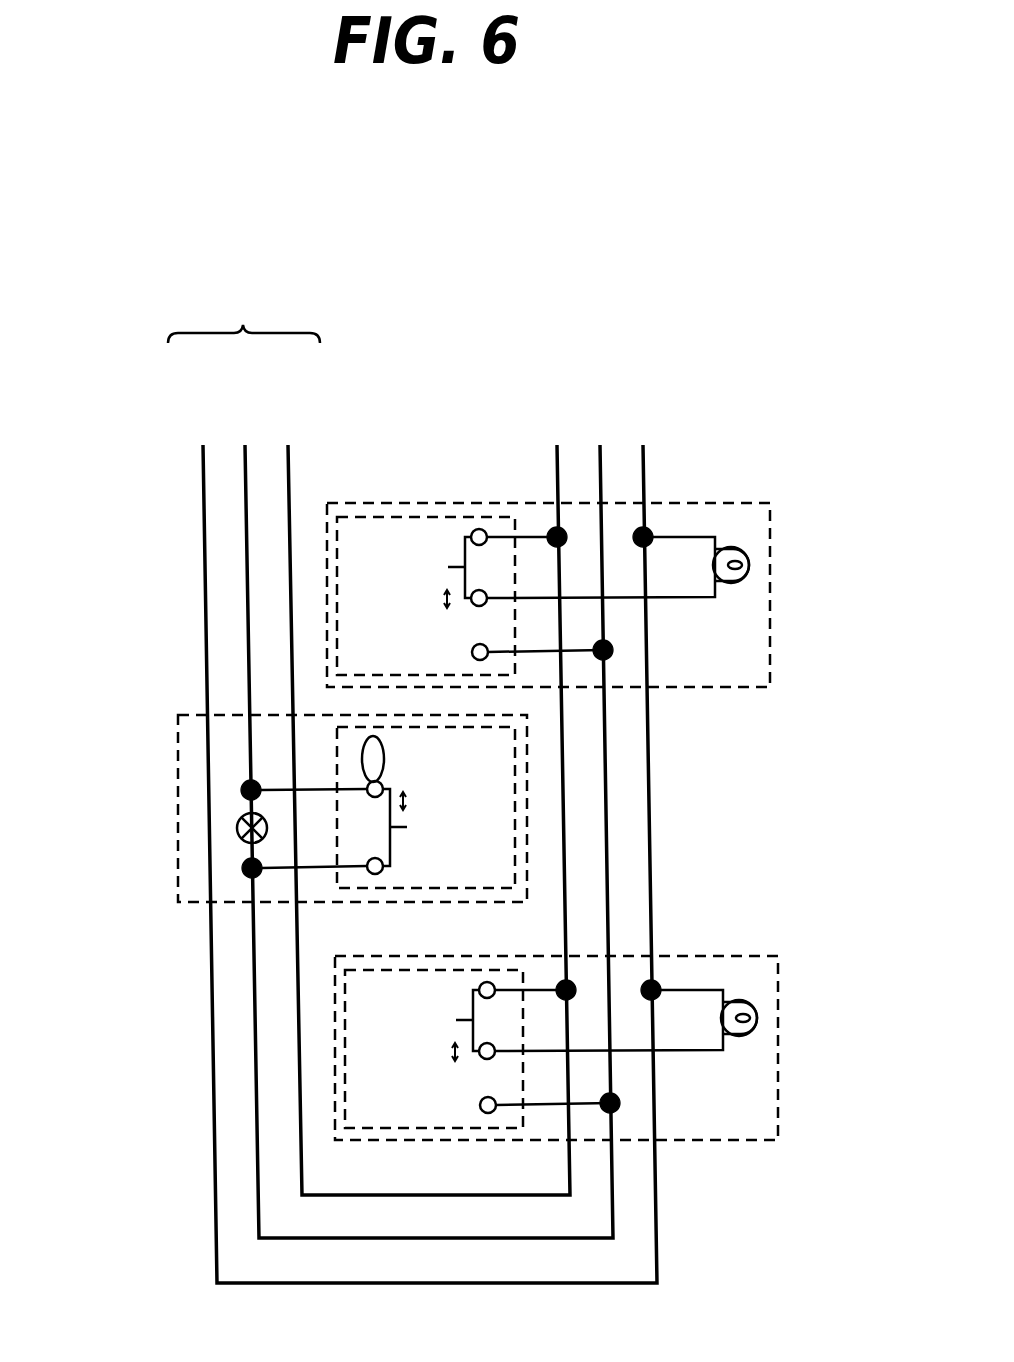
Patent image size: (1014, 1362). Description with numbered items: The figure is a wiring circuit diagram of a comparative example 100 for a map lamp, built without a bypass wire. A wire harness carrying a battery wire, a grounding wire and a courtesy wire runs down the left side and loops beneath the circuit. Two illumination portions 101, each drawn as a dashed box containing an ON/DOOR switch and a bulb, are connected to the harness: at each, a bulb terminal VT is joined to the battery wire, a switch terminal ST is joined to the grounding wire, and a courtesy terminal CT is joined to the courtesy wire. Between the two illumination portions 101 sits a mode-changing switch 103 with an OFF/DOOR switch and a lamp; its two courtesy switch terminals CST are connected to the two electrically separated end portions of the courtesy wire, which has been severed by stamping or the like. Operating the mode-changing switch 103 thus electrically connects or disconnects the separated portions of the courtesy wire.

The comparative example 100 is at (604, 370).
The illumination portion 101 is at (405, 503).
The mode-changing switch 103 is at (527, 772).
The switch terminal ST is at (557, 537).
The bulb terminal VT is at (643, 537).
The courtesy terminal CT is at (603, 650).
The courtesy switch terminal CST is at (251, 790).